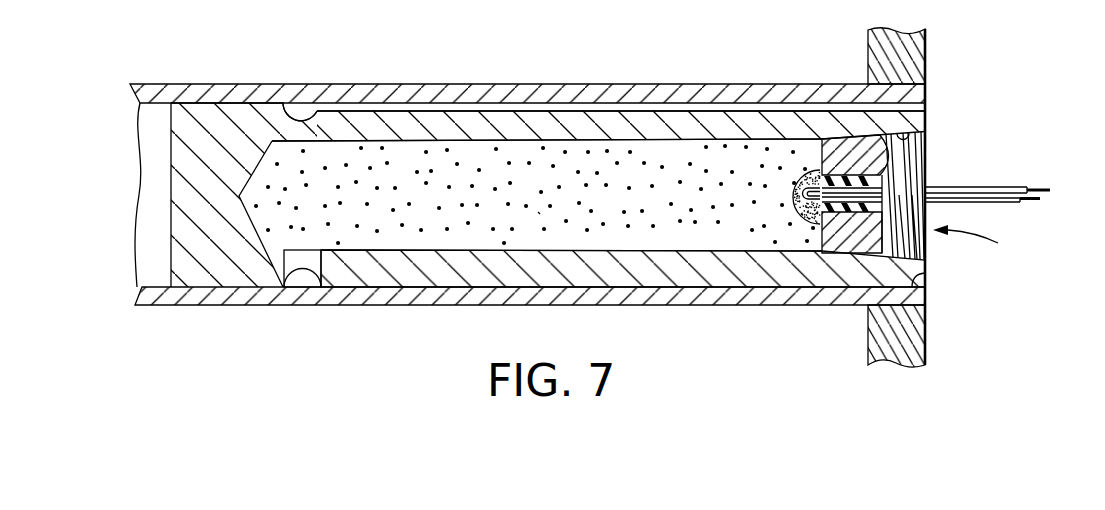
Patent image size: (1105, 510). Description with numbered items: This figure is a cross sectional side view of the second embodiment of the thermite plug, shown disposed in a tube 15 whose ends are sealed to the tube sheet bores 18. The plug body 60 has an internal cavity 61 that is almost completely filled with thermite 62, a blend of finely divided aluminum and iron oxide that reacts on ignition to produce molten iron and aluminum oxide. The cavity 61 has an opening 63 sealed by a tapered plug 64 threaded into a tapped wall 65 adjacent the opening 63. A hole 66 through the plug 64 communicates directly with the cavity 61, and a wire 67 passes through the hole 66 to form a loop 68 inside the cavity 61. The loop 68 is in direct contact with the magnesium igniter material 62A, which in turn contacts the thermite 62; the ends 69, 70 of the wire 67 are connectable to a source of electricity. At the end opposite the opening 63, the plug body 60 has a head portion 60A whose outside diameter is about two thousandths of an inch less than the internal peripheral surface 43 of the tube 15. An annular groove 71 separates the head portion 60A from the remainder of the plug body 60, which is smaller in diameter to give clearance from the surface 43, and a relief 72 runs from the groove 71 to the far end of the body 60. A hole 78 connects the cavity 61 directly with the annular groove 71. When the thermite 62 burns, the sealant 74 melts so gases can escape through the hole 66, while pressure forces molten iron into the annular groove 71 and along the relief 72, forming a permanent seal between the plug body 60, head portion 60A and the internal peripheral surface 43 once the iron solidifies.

The tube 15 is at (760, 92).
The tube sheet bore 18 is at (927, 106).
The internal peripheral surface 43 is at (927, 273).
The plug body 60 is at (432, 123).
The head portion 60A is at (202, 135).
The internal cavity 61 is at (516, 205).
The thermite 62 is at (538, 212).
The igniter material 62A is at (806, 210).
The opening 63 is at (979, 240).
The plug 64 is at (900, 175).
The tapped wall 65 is at (905, 146).
The hole 66 is at (820, 167).
The wire 67 is at (997, 193).
The loop 68 is at (797, 210).
The end of wire 69 is at (1037, 190).
The end of wire 70 is at (1033, 200).
The annular groove 71 is at (300, 112).
The relief 72 is at (347, 118).
The sealant 74 is at (865, 208).
The hole 78 is at (302, 258).